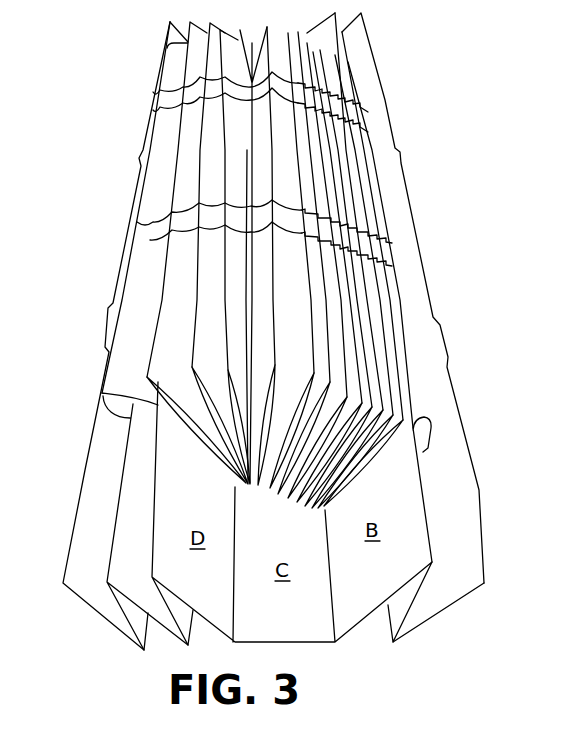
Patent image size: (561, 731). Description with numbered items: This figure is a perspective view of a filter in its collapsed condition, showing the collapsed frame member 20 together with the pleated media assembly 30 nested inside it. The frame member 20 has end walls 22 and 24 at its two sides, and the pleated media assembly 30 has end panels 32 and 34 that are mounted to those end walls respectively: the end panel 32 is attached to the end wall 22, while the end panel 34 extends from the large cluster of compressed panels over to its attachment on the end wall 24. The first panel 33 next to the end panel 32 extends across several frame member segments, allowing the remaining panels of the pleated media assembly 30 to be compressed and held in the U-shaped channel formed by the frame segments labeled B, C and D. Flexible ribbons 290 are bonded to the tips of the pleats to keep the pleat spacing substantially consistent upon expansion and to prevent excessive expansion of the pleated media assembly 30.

The frame member 20 is at (430, 277).
The end wall 22 is at (79, 493).
The end wall 24 is at (482, 493).
The pleated media assembly 30 is at (338, 148).
The end panel 32 is at (102, 391).
The first panel 33 is at (133, 284).
The end panel 34 is at (430, 423).
The flexible ribbons 290 is at (148, 220).